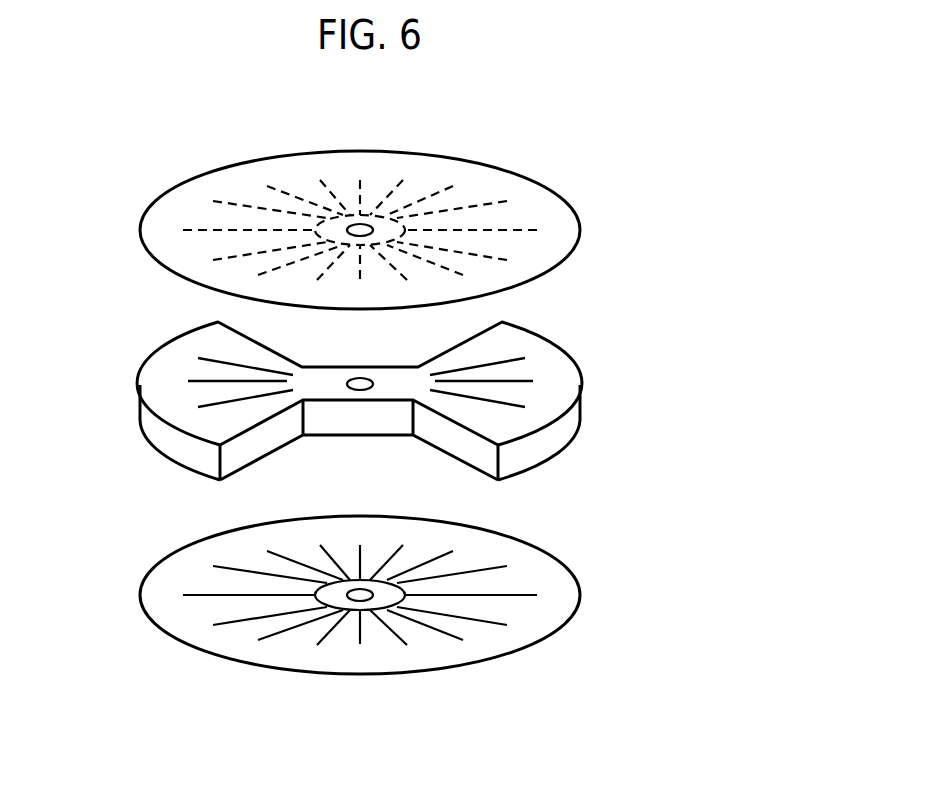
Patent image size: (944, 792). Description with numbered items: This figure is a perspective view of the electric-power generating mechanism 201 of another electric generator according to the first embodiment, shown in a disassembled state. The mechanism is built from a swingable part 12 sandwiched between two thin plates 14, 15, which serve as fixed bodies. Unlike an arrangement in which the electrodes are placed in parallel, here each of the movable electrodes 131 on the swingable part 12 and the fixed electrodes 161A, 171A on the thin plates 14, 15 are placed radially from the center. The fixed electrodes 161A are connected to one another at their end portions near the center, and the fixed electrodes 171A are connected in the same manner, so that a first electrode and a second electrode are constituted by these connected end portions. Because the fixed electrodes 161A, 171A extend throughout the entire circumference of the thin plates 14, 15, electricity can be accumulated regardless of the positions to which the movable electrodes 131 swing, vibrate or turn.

The electric-power generating mechanism 201 is at (568, 165).
The thin plate 14 is at (142, 220).
The fixed electrodes 161A is at (388, 202).
The swingable part 12 is at (147, 366).
The movable electrodes 131 is at (520, 378).
The thin plate 15 is at (142, 583).
The fixed electrodes 171A is at (477, 617).